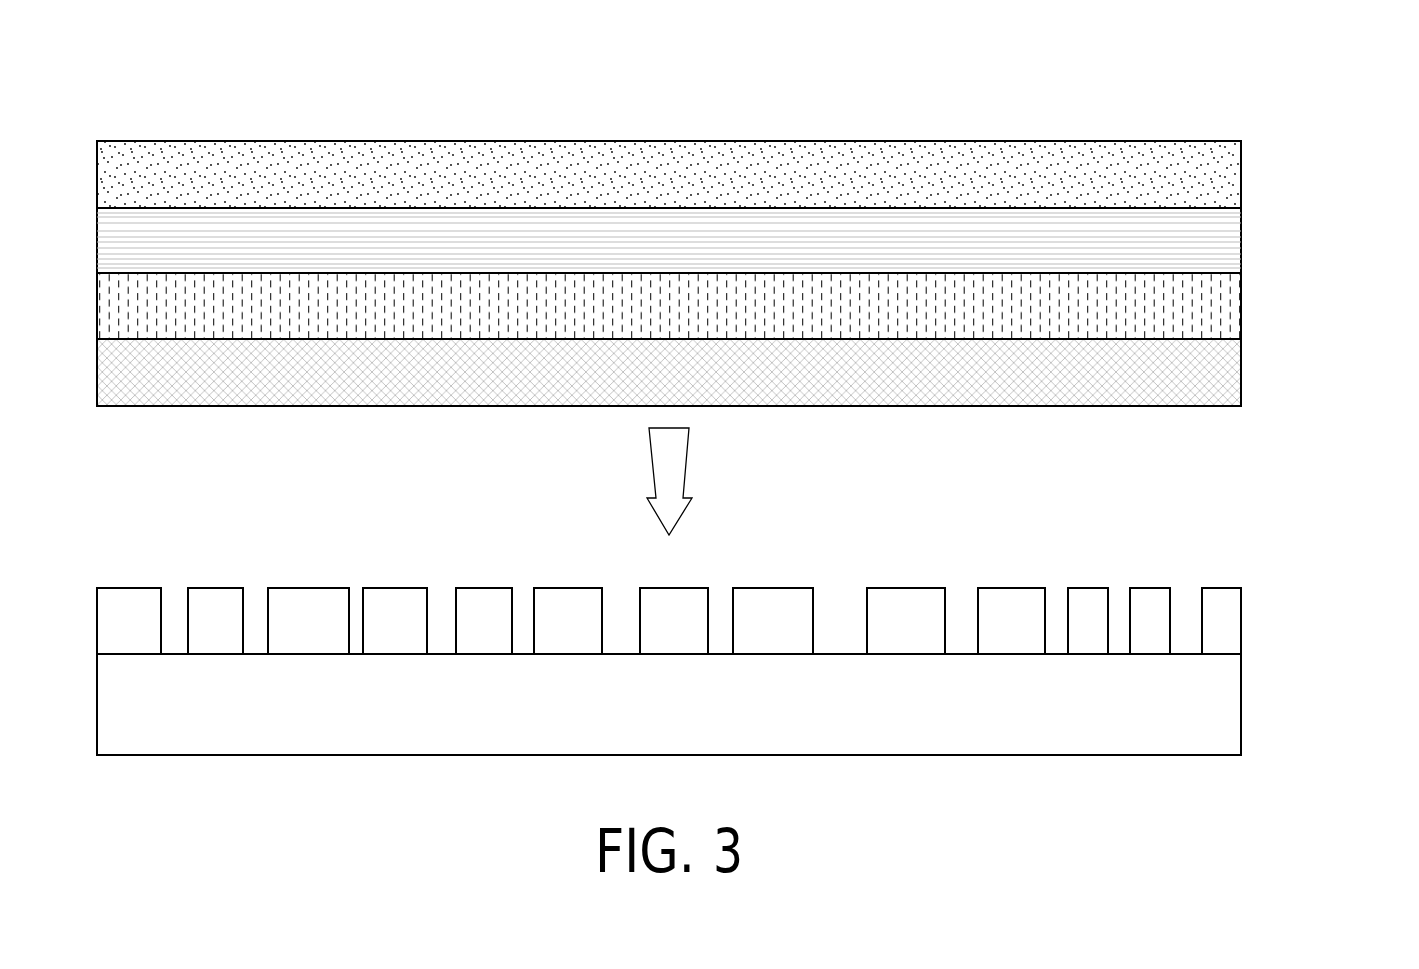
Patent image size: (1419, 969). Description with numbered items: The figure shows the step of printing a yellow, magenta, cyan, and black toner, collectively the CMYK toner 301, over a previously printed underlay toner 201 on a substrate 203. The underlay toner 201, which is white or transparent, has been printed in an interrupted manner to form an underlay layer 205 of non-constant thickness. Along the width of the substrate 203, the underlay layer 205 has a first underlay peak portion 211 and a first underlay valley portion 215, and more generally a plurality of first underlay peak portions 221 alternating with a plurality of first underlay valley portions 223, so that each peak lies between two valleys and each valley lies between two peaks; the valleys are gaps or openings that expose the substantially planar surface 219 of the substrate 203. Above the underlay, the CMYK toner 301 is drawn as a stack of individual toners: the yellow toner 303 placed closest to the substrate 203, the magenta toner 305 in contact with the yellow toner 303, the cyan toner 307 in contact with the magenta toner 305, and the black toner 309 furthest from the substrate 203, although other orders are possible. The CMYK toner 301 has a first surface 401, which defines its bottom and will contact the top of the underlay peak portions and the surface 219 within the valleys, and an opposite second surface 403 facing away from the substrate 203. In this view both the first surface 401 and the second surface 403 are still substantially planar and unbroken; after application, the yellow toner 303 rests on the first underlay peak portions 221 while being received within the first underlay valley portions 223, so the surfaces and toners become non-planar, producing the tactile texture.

The CMYK toner 301 is at (1323, 126).
The yellow toner 303 is at (1228, 372).
The magenta toner 305 is at (1228, 309).
The cyan toner 307 is at (1228, 236).
The black toner 309 is at (1228, 177).
The first surface 401 is at (784, 420).
The second surface 403 is at (783, 128).
The underlay toner 201 is at (566, 596).
The substrate 203 is at (1138, 738).
The underlay layer 205 is at (1280, 614).
The first underlay peak portion 211 is at (752, 596).
The first underlay valley portion 215 is at (858, 582).
The surface 219 is at (958, 637).
The first underlay peak portions 221 is at (1013, 596).
The first underlay valley portions 223 is at (1058, 582).